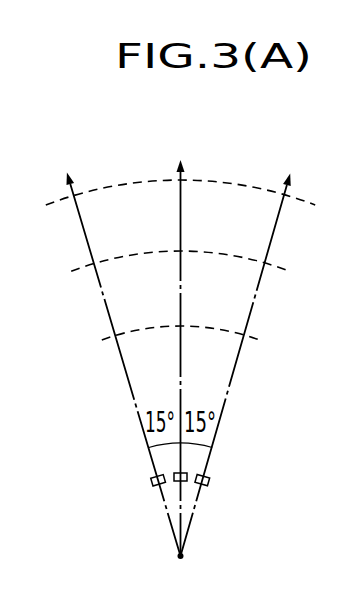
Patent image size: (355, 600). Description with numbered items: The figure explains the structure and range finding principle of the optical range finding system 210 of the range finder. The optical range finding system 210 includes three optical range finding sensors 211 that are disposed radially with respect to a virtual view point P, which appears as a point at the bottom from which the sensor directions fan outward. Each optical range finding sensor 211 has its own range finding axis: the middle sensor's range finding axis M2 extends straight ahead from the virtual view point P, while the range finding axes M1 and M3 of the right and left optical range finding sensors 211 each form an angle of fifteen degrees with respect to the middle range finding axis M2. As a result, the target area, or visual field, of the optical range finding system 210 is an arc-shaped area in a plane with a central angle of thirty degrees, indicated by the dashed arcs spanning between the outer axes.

The optical range finding system 210 is at (171, 480).
The optical range finding sensor 211 is at (146, 480).
The range finding axis M1 is at (113, 347).
The range finding axis M2 is at (181, 342).
The range finding axis M3 is at (247, 347).
The virtual view point P is at (214, 557).